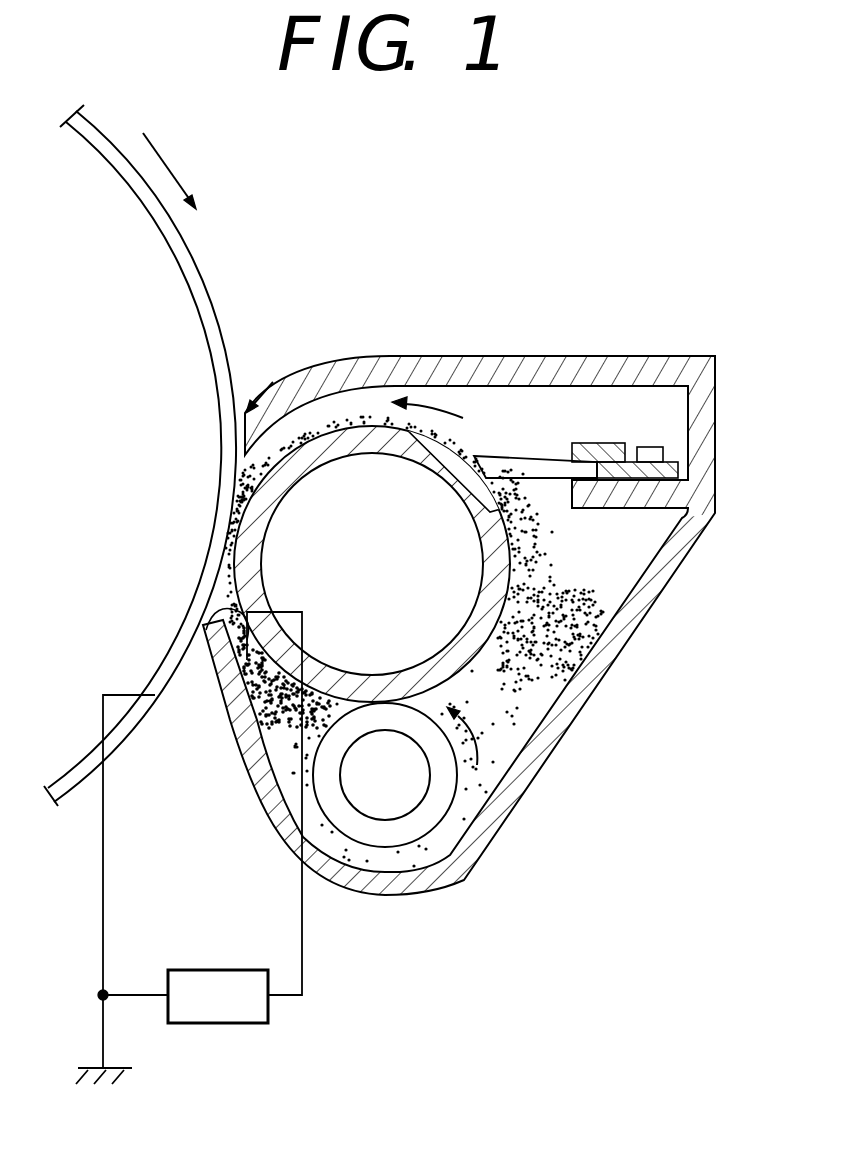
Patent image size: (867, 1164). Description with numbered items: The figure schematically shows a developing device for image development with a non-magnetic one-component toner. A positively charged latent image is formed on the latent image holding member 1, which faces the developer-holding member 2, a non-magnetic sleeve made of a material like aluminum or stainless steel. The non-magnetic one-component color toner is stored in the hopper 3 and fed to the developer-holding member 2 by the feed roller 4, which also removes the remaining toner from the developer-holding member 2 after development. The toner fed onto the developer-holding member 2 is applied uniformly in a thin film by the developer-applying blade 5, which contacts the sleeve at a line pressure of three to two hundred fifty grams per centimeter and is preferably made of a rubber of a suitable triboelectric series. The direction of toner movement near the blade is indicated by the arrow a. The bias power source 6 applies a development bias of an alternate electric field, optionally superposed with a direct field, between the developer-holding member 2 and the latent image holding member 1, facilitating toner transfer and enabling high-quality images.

The latent image holding member 1 is at (197, 272).
The developer-holding member 2 is at (378, 420).
The hopper 3 is at (537, 702).
The feed roller 4 is at (437, 827).
The developer-applying blade 5 is at (545, 460).
The bias power source 6 is at (242, 1023).
The toner circulation direction a is at (442, 420).